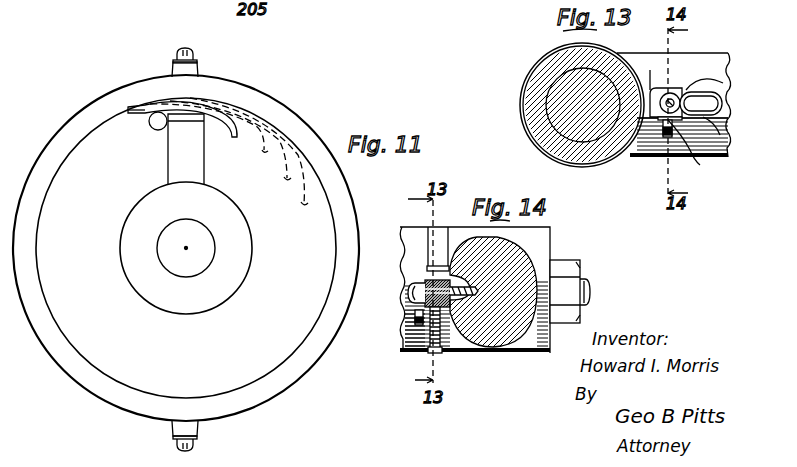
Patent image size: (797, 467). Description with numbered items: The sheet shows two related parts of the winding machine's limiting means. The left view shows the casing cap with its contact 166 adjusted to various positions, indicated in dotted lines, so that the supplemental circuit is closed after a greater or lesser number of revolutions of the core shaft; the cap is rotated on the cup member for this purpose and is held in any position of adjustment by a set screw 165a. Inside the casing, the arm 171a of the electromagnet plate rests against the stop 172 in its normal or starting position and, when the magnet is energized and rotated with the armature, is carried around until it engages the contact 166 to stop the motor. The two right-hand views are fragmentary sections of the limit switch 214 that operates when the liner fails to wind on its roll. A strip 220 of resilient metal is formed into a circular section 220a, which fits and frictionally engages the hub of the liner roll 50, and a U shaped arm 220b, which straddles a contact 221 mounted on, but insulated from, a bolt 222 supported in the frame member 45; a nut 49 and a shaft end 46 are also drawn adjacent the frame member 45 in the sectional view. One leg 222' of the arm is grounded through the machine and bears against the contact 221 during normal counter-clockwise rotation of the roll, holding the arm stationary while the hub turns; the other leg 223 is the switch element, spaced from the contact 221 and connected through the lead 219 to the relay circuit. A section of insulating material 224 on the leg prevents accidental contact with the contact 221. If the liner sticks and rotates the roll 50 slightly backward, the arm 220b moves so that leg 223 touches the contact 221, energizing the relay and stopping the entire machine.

In FIG. 11, the set screw 165a is at (193, 55).
In FIG. 11, the arm 171a is at (173, 156).
In FIG. 11, the stop 172 is at (152, 128).
In FIG. 11, the contact 166 is at (218, 151).
In FIG. 13, the liner roll 50 is at (541, 137).
In FIG. 14, the liner roll 50 is at (402, 232).
In FIG. 13, the shaft 46 is at (552, 98).
In FIG. 14, the shaft 46 is at (591, 298).
In FIG. 13, the frame member 45 is at (720, 53).
In FIG. 14, the frame member 45 is at (518, 263).
In FIG. 14, the nut 49 is at (568, 268).
In FIG. 13, the limit switch 214 is at (679, 89).
In FIG. 14, the limit switch 214 is at (413, 278).
In FIG. 13, the contact 221 is at (701, 103).
In FIG. 14, the contact 221 is at (443, 280).
In FIG. 13, the bolt 222 is at (655, 71).
In FIG. 14, the bolt 222 is at (386, 307).
In FIG. 13, the leg 222' is at (739, 134).
In FIG. 13, the strip 220 is at (722, 108).
In FIG. 13, the circular section 220a is at (580, 167).
In FIG. 14, the circular section 220a is at (445, 358).
In FIG. 13, the U shaped arm 220b is at (723, 90).
In FIG. 13, the leg 223 is at (727, 70).
In FIG. 14, the leg 223 is at (428, 270).
In FIG. 13, the section of insulating material 224 is at (704, 150).
In FIG. 14, the section of insulating material 224 is at (430, 343).
In FIG. 13, the lead 219 is at (665, 121).
In FIG. 14, the lead 219 is at (417, 321).